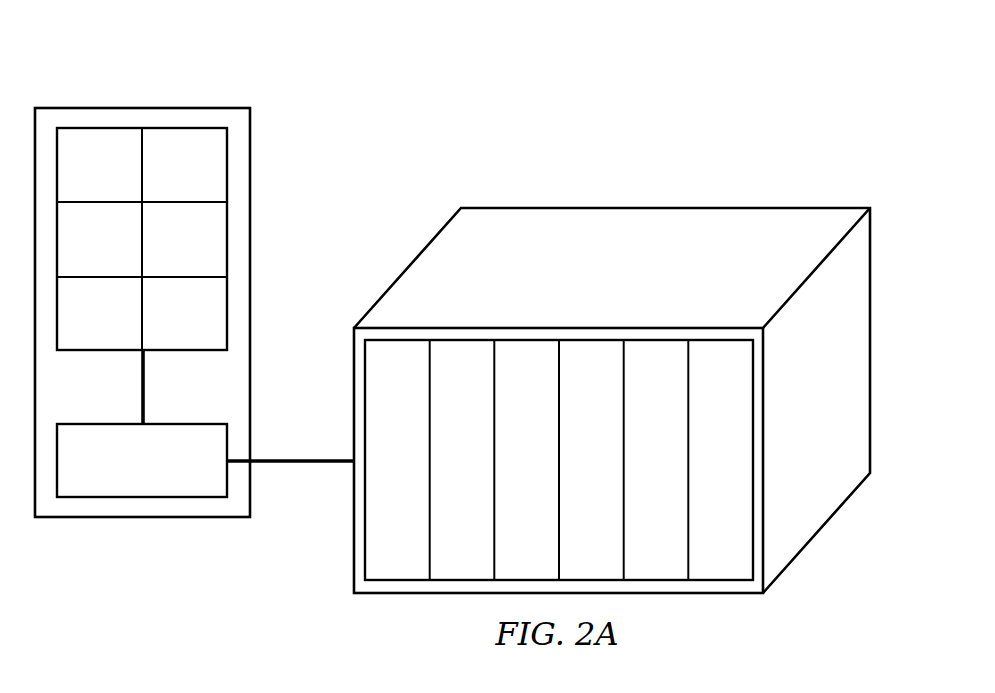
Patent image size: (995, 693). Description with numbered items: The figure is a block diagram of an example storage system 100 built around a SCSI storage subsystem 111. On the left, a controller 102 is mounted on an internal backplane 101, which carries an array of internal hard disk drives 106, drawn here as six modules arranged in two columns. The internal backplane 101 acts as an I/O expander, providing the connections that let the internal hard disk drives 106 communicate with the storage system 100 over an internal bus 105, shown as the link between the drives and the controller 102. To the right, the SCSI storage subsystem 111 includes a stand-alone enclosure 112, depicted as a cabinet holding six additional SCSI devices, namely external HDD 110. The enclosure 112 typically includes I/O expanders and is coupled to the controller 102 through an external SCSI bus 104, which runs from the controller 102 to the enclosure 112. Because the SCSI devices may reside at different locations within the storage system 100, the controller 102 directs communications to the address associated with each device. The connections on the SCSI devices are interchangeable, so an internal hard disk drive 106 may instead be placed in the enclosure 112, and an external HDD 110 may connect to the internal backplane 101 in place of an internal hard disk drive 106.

The storage system 100 is at (551, 66).
The internal backplane 101 is at (120, 104).
The controller 102 is at (123, 477).
The SCSI bus 104 is at (307, 465).
The internal bus 105 is at (140, 376).
The hard disk drives 106 is at (80, 182).
The HDD 110 is at (378, 475).
The SCSI storage subsystem 111 is at (820, 160).
The stand-alone enclosure 112 is at (735, 203).